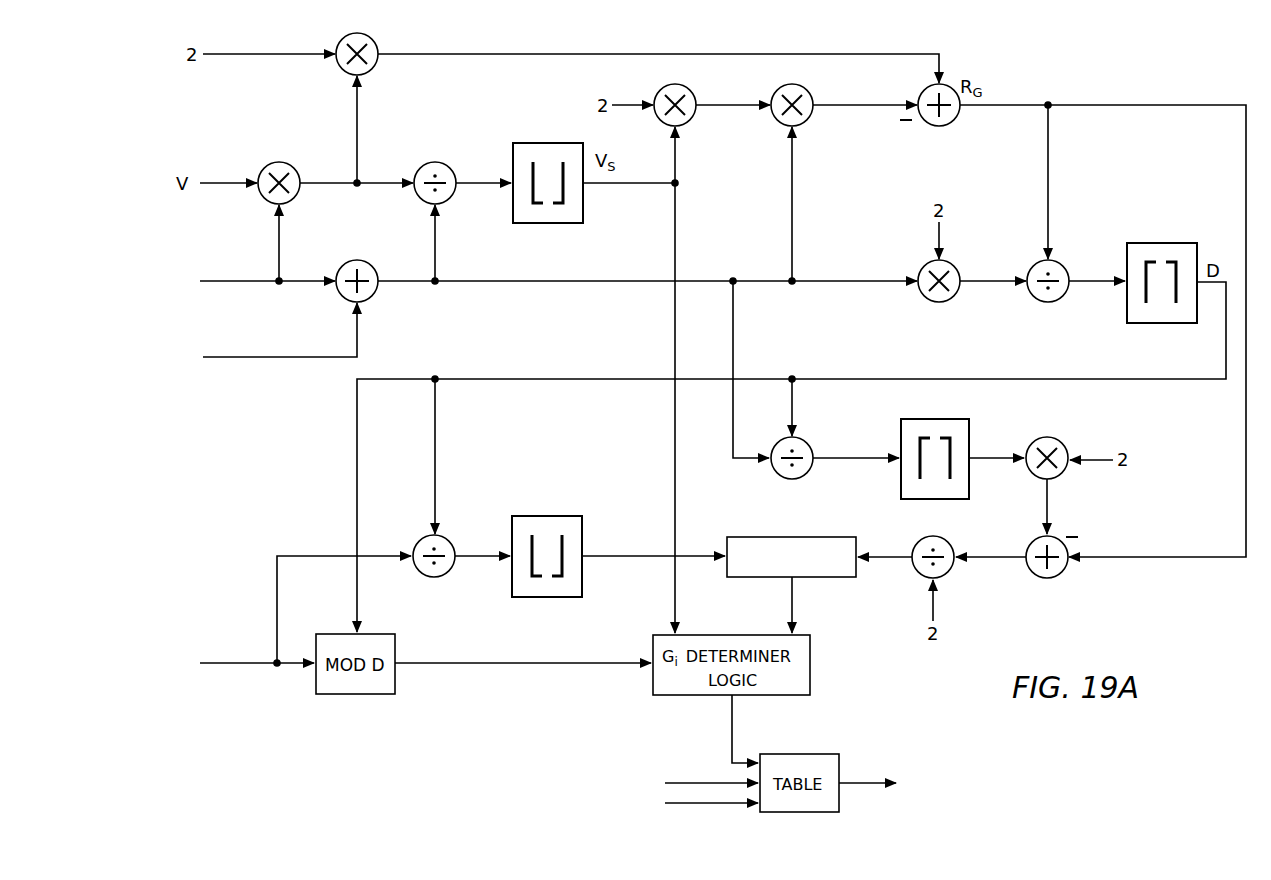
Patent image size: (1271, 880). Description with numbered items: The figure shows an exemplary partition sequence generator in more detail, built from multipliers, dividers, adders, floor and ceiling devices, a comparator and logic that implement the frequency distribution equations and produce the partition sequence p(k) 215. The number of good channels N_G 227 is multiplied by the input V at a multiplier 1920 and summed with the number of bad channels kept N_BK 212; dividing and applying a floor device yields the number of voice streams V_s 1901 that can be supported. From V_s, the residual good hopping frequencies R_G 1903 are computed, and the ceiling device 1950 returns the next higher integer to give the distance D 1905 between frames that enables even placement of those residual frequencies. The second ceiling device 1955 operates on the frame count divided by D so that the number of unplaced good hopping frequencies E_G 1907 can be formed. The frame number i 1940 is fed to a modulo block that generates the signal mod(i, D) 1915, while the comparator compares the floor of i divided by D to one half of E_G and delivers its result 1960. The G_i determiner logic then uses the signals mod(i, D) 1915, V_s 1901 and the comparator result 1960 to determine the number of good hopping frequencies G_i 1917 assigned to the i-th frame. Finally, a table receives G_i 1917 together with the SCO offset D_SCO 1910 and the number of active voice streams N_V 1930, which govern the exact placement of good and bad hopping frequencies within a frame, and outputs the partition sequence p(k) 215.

The multiplier 1920 is at (223, 177).
The number of good channels 227 is at (225, 275).
The number of bad channels kept 212 is at (222, 364).
The number of voice streams V_s 1901 is at (614, 186).
The residual good hopping frequencies R_G 1903 is at (1021, 100).
The ceiling device 1950 is at (1159, 242).
The distance D between frames 1905 is at (552, 377).
The ceiling device 1955 is at (899, 433).
The number of unplaced good hopping frequencies E_G 1907 is at (993, 561).
The comparator result 1960 is at (792, 596).
The frame number i 1940 is at (222, 666).
The signal mod(i, D) 1915 is at (522, 668).
The number of good hopping frequencies G_i 1917 is at (735, 711).
The offset D_SCO 1910 is at (696, 778).
The number of voice streams N_V 1930 is at (695, 808).
The partition sequence p(k) 215 is at (864, 777).